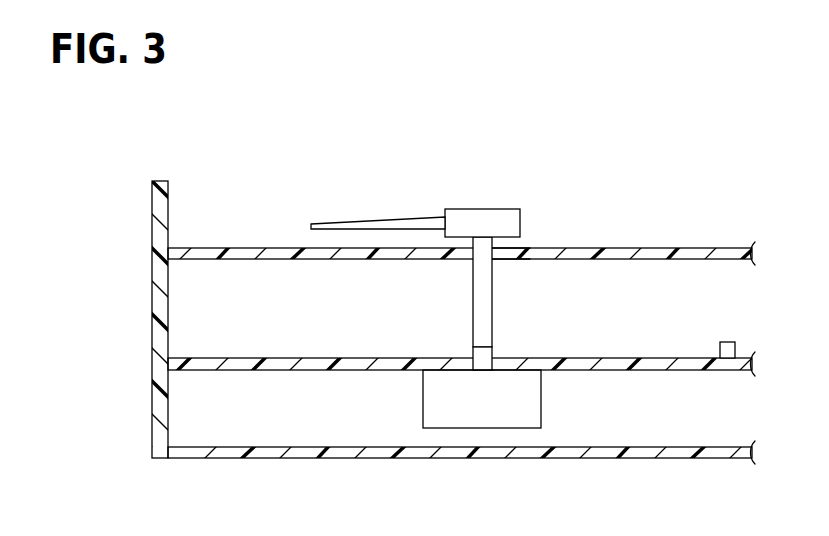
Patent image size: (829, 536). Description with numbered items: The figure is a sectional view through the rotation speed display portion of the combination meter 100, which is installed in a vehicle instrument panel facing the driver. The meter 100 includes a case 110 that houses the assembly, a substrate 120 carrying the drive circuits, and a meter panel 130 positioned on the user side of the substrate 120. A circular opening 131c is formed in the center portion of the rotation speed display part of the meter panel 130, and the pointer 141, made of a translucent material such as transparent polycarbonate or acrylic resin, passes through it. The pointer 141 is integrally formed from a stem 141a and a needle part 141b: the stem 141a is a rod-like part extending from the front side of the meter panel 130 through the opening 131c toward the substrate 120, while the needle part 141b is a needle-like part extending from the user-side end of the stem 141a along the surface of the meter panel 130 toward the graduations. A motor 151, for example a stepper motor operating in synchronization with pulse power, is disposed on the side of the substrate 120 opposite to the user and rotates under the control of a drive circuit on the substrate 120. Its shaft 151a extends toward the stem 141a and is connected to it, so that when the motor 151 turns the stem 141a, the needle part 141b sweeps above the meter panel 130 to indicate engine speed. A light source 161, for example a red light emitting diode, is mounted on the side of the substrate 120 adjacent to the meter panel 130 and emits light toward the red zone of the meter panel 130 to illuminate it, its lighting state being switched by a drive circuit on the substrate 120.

The combination meter 100 is at (280, 211).
The case 110 is at (152, 320).
The substrate 120 is at (204, 372).
The meter panel 130 is at (206, 247).
The circular opening 131c is at (497, 248).
The pointer 141 is at (346, 220).
The stem 141a is at (473, 298).
The needle part 141b is at (391, 224).
The motor 151 is at (460, 428).
The shaft 151a is at (478, 353).
The light source 161 is at (720, 350).